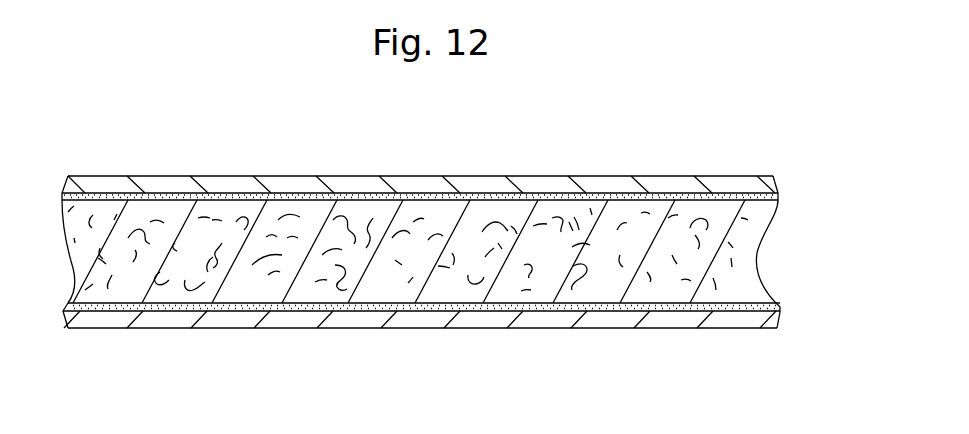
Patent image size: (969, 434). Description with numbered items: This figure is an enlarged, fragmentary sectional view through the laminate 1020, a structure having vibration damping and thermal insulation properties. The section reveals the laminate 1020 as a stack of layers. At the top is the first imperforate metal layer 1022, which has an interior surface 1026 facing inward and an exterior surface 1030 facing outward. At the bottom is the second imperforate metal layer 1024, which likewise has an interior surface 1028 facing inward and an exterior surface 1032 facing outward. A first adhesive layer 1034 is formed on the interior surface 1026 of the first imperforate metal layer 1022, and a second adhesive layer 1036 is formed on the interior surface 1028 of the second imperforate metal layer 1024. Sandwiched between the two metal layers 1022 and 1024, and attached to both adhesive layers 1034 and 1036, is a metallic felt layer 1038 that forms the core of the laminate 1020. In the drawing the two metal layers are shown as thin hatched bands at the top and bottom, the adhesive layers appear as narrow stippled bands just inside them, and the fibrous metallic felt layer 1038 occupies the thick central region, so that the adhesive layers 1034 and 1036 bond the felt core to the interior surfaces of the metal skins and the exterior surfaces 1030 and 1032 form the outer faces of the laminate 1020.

The laminate 1020 is at (113, 143).
The first imperforate metal layer 1022 is at (333, 188).
The second imperforate metal layer 1024 is at (352, 320).
The interior surface 1026 is at (666, 199).
The interior surface 1028 is at (220, 305).
The exterior surface 1030 is at (183, 176).
The exterior surface 1032 is at (728, 328).
The first adhesive layer 1034 is at (762, 198).
The second adhesive layer 1036 is at (488, 308).
The metallic felt layer 1038 is at (610, 282).